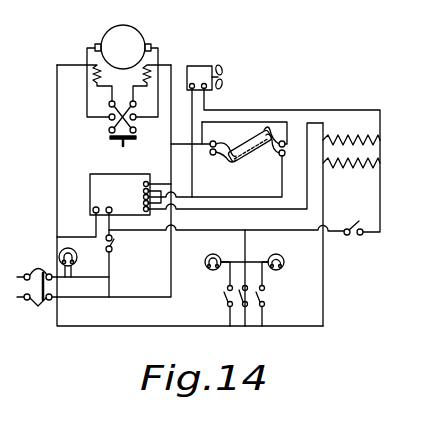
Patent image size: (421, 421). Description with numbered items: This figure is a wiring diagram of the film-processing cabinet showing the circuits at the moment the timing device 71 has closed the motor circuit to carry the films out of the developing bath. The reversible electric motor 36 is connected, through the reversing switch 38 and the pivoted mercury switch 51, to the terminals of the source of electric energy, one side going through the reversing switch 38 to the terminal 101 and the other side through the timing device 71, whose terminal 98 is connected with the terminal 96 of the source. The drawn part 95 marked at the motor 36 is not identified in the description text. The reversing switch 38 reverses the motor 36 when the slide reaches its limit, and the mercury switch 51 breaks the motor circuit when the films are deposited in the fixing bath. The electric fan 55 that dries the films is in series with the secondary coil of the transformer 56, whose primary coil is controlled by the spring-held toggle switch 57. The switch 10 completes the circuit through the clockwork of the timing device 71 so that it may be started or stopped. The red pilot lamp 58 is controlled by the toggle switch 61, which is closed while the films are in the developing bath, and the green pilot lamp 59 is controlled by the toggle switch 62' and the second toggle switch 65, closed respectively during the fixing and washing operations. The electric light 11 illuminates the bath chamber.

The electric motor 36 is at (135, 41).
The motor terminal 95 is at (98, 44).
The reversing switch 38 is at (109, 126).
The electric fan 55 is at (205, 68).
The mercury switch 51 is at (262, 152).
The timing device 71 is at (118, 178).
The terminal of the timing device 98 is at (143, 184).
The transformer 56 is at (372, 152).
The toggle switch 57 is at (354, 222).
The switch 10 is at (112, 244).
The electric light 11 is at (76, 258).
The terminal of the source of energy 101 is at (35, 266).
The terminal of a source of electric energy 96 is at (37, 298).
The green pilot lamp 59 is at (219, 250).
The red pilot lamp 58 is at (284, 257).
The second toggle switch 65 is at (216, 296).
The toggle switch 62' is at (237, 318).
The toggle switch 61 is at (268, 296).